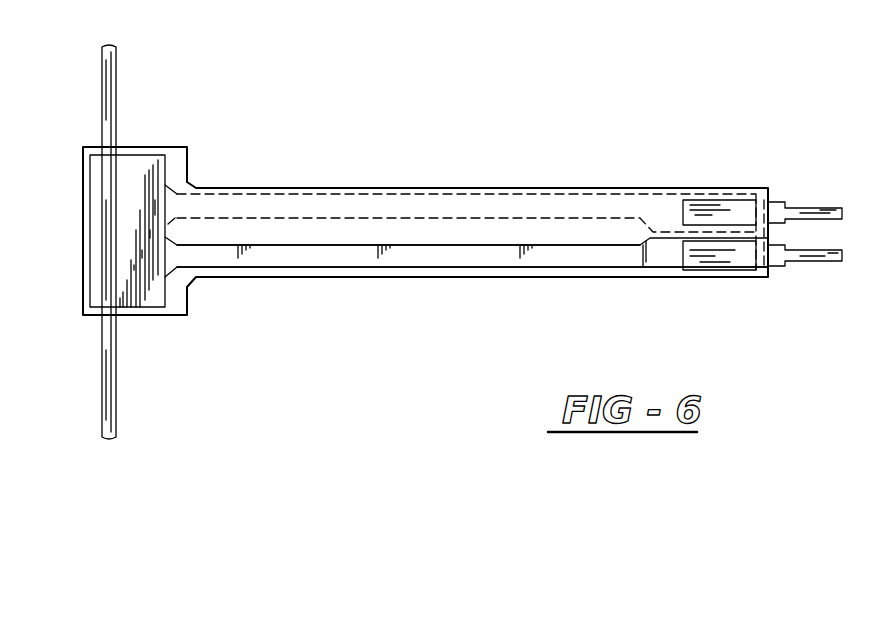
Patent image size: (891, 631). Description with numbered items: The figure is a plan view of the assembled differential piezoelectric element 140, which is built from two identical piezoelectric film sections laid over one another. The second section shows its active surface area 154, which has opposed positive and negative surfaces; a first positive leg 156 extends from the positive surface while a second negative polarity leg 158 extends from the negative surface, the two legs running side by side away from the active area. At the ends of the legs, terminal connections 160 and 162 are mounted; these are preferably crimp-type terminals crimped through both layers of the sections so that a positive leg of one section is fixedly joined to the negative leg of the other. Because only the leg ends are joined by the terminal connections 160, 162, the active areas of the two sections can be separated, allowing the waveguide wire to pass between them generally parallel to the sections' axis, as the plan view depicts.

The differential piezoelectric element 140 is at (653, 180).
The active surface area 154 is at (150, 166).
The first positive leg 156 is at (493, 188).
The second negative polarity leg 158 is at (438, 262).
The terminal connection 160 is at (775, 210).
The terminal connection 162 is at (777, 258).